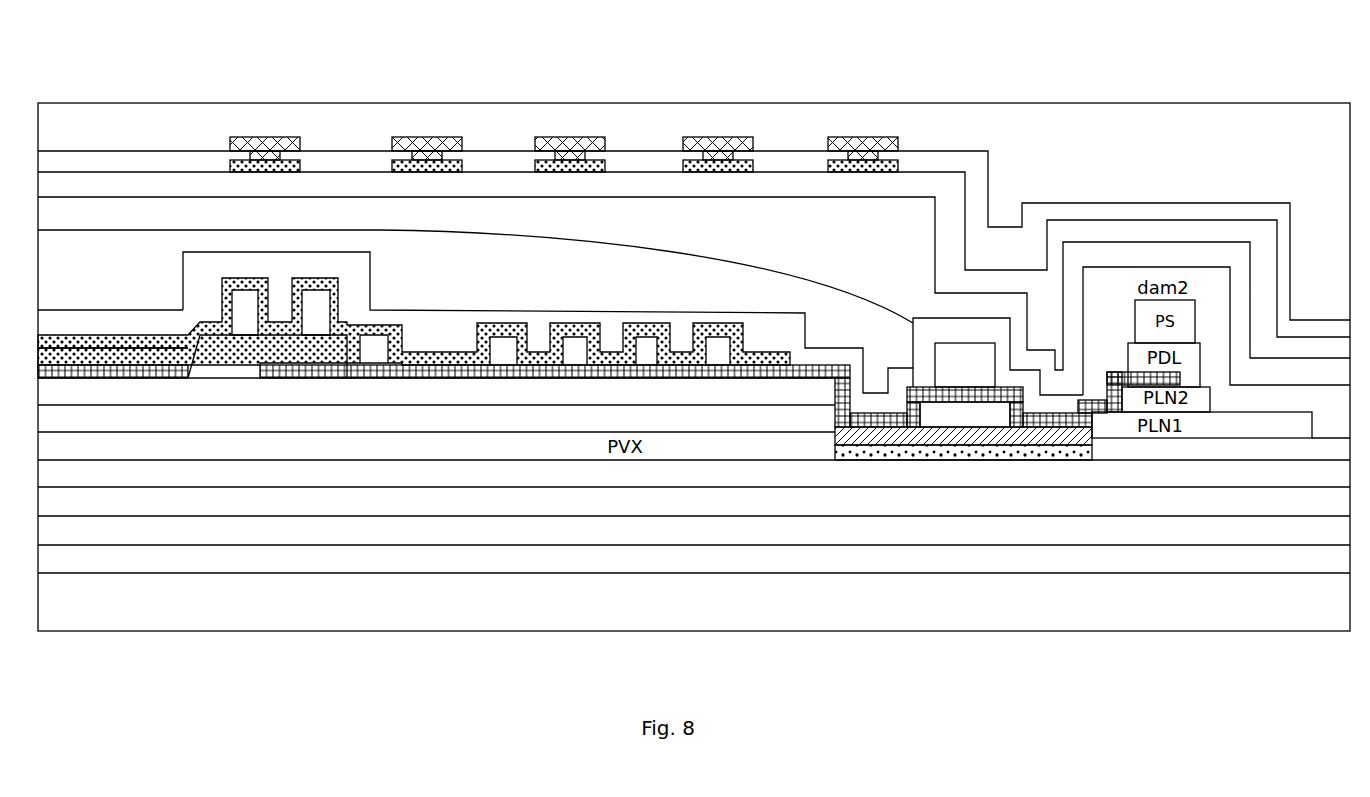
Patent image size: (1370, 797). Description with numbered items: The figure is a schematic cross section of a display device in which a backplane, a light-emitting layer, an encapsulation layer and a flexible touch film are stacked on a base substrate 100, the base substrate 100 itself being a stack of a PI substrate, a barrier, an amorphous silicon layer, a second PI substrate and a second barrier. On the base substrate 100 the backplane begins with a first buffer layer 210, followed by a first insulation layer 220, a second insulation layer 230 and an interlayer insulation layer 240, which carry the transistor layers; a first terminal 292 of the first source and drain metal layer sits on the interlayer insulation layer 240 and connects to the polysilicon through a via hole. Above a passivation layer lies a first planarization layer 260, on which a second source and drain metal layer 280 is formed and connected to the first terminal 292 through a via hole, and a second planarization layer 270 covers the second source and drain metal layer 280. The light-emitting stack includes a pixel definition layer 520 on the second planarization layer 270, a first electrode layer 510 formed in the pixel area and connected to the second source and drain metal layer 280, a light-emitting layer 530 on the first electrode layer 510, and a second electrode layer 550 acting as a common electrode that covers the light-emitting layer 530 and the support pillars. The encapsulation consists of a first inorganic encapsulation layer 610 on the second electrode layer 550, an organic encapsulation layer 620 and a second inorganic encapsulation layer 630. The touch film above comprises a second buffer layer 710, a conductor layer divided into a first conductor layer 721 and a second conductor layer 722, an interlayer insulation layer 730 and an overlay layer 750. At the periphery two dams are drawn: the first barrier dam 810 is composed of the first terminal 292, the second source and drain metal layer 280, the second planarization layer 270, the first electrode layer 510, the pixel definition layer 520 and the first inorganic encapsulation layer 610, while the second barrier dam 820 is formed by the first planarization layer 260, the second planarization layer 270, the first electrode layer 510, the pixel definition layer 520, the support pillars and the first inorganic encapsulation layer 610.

The base substrate 100 is at (348, 612).
The first buffer layer 210 is at (748, 557).
The first insulation layer 220 is at (797, 530).
The second insulation layer 230 is at (845, 500).
The interlayer insulation layer 240 is at (887, 477).
The first planarization layer 260 is at (537, 420).
The second planarization layer 270 is at (507, 393).
The second source and drain metal layer 280 is at (1060, 440).
The first terminal 292 is at (1010, 455).
The first electrode layer 510 is at (70, 367).
The pixel definition layer 520 is at (205, 355).
The light-emitting layer 530 is at (110, 355).
The second electrode layer 550 is at (145, 338).
The first inorganic encapsulation layer 610 is at (65, 328).
The organic encapsulation layer 620 is at (118, 262).
The second inorganic encapsulation layer 630 is at (177, 212).
The second buffer layer 710 is at (307, 192).
The first conductor layer 721 is at (597, 172).
The second conductor layer 722 is at (548, 150).
The interlayer insulation layer 730 is at (908, 172).
The overlay layer 750 is at (785, 137).
The first barrier dam 810 is at (988, 316).
The second barrier dam 820 is at (1172, 265).